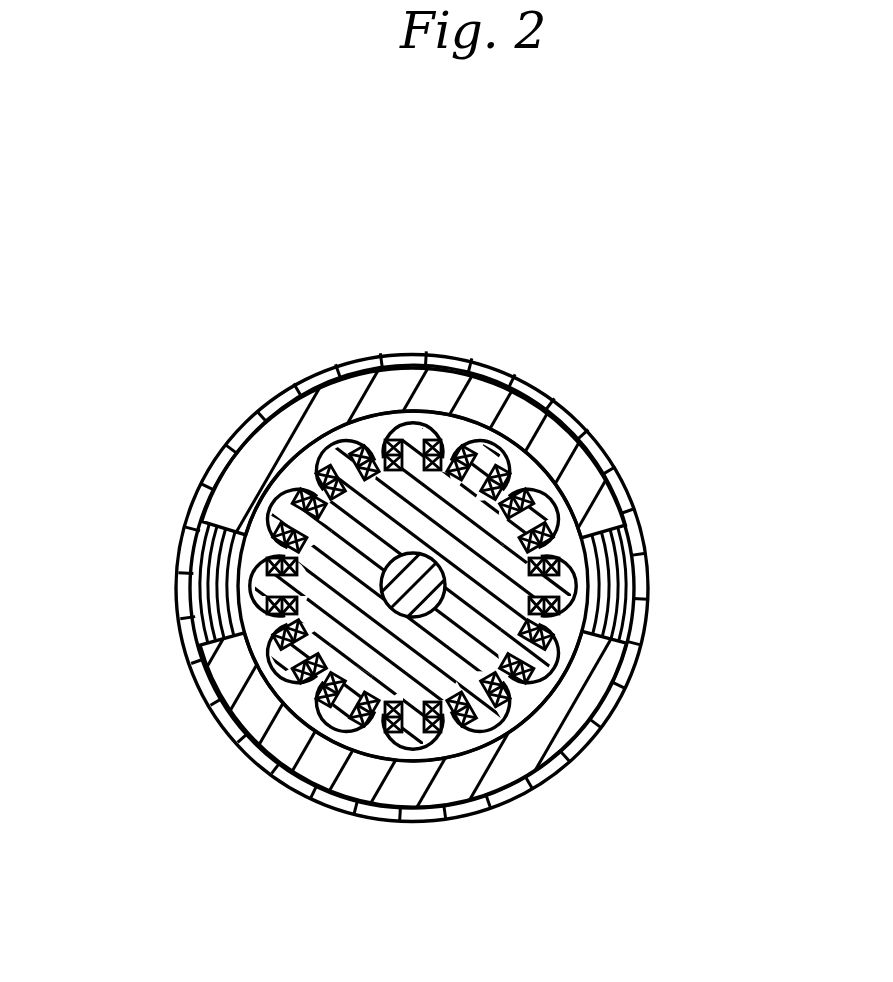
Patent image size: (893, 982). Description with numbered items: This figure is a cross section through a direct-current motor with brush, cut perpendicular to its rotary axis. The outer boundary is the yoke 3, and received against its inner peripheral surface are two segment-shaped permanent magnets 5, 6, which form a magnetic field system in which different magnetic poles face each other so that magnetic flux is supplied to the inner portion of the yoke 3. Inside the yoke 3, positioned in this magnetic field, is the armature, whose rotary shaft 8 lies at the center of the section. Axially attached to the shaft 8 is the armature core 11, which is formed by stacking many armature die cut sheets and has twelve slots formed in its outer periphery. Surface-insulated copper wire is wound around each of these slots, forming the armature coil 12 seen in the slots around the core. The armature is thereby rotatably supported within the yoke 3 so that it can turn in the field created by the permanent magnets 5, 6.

The yoke 3 is at (455, 357).
The permanent magnet 5 is at (497, 402).
The permanent magnet 6 is at (405, 820).
The shaft 8 is at (343, 607).
The armature core 11 is at (500, 583).
The armature coil 12 is at (295, 545).